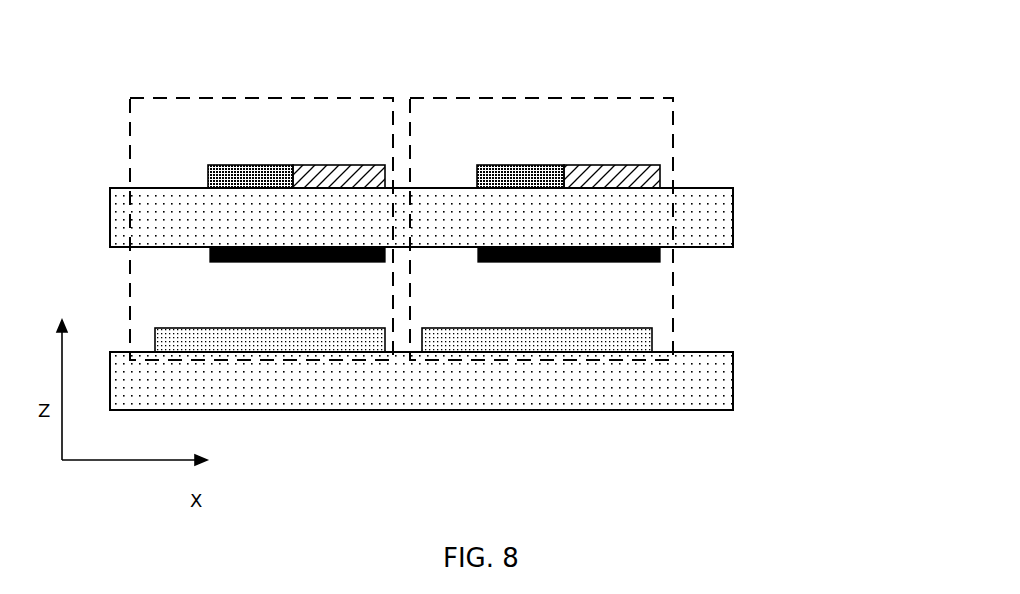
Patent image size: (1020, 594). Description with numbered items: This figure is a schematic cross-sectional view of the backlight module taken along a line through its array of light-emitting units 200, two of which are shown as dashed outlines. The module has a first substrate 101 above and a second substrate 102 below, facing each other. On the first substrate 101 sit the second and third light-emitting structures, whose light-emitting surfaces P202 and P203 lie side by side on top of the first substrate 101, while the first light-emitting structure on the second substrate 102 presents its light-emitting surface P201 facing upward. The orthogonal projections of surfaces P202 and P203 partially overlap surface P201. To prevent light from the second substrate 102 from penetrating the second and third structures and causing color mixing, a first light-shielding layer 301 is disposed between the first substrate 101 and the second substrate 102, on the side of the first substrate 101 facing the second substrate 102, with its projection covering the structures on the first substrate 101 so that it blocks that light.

The first substrate 101 is at (733, 218).
The second substrate 102 is at (733, 385).
The light-emitting unit 200 is at (300, 98).
The first light-shielding layer 301 is at (660, 252).
The light-emitting surface of the first light-emitting structure P201 is at (153, 328).
The light-emitting surface of the second light-emitting structure P202 is at (232, 165).
The light-emitting surface of the third light-emitting structure P203 is at (340, 165).